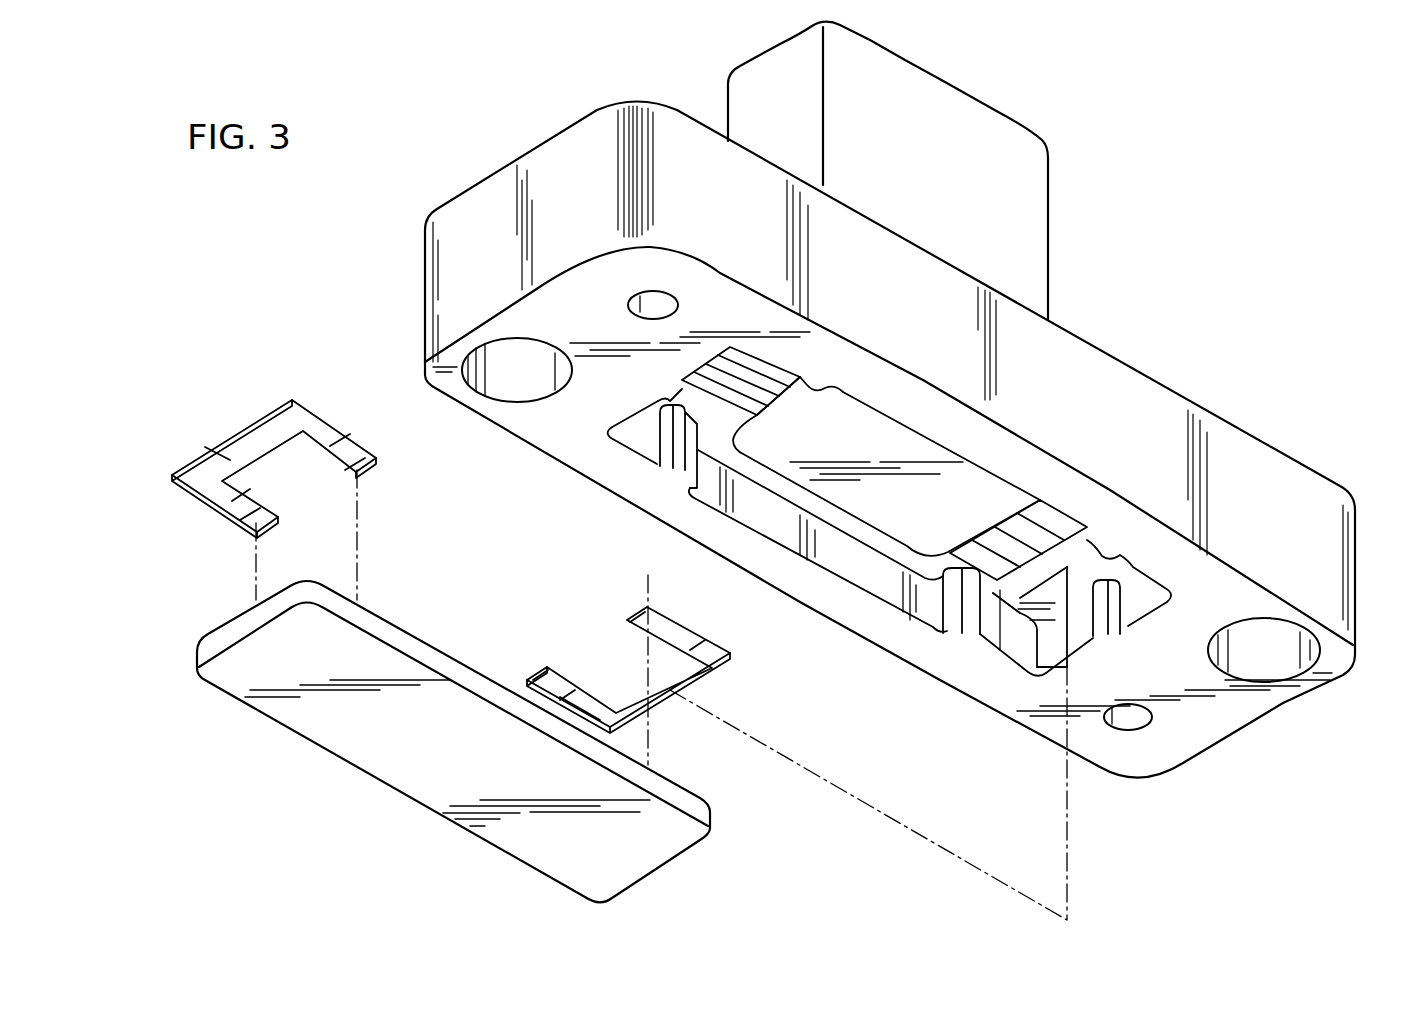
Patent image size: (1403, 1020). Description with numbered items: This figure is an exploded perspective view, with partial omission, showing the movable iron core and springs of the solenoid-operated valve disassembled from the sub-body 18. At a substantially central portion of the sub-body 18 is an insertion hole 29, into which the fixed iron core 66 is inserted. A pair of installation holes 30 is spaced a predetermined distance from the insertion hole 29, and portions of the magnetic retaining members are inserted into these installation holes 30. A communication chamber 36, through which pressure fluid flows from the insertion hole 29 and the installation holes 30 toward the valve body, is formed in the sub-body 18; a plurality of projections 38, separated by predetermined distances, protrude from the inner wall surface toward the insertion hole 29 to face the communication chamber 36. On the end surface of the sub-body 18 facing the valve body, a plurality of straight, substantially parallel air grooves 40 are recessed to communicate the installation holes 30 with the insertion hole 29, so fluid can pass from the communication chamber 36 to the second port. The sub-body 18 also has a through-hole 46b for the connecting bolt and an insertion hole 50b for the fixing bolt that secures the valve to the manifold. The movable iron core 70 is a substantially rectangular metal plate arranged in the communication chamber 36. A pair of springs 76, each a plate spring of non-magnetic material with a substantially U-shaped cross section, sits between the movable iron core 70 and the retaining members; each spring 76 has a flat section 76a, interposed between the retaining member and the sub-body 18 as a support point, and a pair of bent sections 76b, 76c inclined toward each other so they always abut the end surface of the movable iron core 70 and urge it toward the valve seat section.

The sub-body 18 is at (1266, 468).
The fixed iron core 66 is at (1012, 258).
The insertion hole 50b is at (540, 382).
The through-hole 46b is at (636, 308).
The insertion hole 29 is at (893, 398).
The communication chamber 36 is at (848, 520).
The installation holes 30 is at (1012, 592).
The projections 38 is at (660, 400).
The air grooves 40 is at (762, 377).
The movable iron core 70 is at (368, 752).
The spring 76 is at (226, 437).
The flat section 76a is at (205, 458).
The bent section 76b is at (262, 522).
The bent section 76c is at (368, 465).